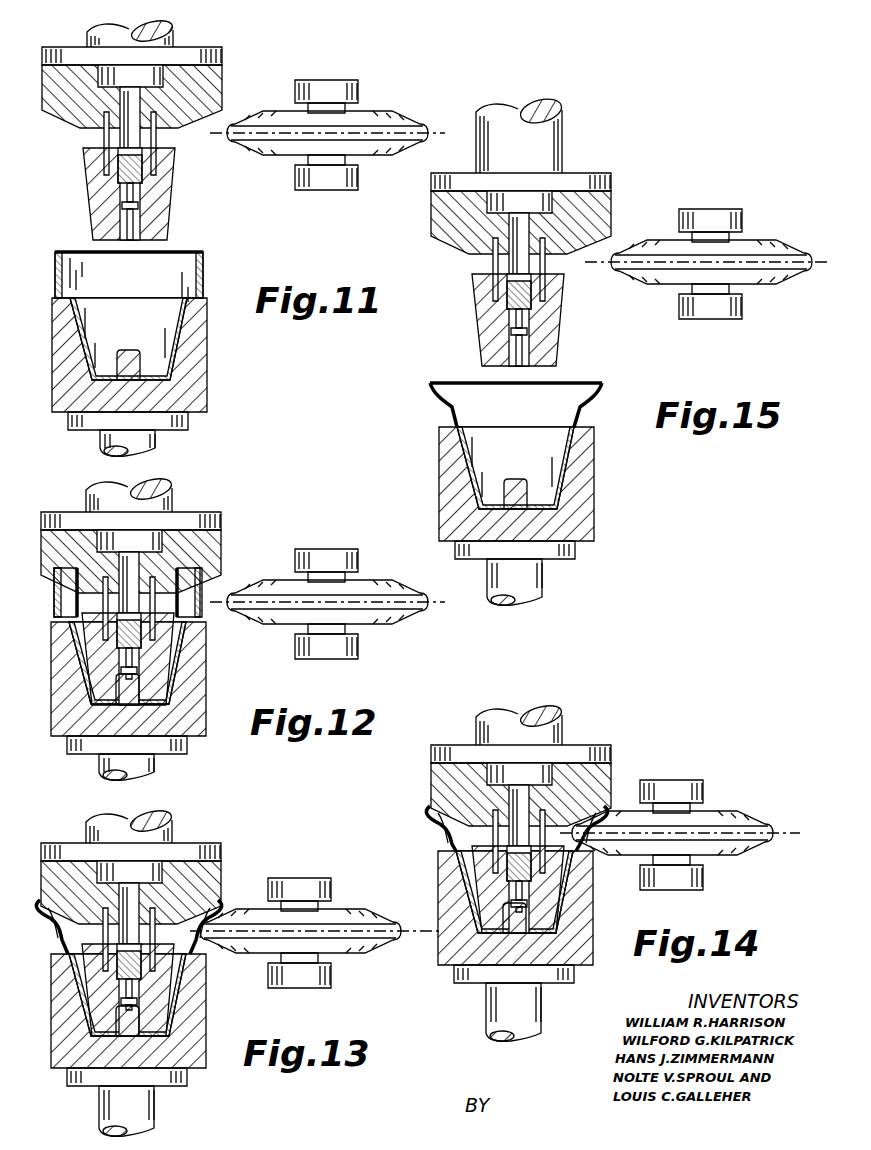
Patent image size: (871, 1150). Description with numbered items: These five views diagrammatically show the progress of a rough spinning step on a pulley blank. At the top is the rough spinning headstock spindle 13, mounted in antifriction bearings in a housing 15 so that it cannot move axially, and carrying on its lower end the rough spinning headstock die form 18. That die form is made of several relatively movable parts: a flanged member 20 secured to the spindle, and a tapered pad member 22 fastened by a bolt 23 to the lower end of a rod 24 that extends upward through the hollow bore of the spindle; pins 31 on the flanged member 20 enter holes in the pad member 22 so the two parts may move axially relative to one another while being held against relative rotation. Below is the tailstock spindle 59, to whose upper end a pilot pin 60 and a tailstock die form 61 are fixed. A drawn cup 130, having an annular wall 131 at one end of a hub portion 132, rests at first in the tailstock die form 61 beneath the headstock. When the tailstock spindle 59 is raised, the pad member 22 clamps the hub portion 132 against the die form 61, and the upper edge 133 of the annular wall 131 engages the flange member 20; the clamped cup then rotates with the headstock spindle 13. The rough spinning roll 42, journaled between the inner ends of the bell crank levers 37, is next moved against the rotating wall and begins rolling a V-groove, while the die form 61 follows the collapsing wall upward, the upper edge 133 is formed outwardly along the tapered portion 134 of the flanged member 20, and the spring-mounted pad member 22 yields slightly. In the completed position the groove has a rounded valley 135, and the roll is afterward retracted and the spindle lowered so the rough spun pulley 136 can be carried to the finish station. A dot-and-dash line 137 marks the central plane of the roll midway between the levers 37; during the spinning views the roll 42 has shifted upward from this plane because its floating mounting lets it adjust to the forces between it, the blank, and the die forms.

In FIG. 11, the headstock spindle 13 is at (88, 40).
In FIG. 15, the headstock spindle 13 is at (563, 135).
In FIG. 12, the headstock spindle 13 is at (86, 495).
In FIG. 13, the headstock spindle 13 is at (90, 830).
In FIG. 14, the housing 15 is at (563, 732).
In FIG. 11, the rough spinning headstock die form 18 is at (222, 80).
In FIG. 15, the rough spinning headstock die form 18 is at (606, 207).
In FIG. 12, the rough spinning headstock die form 18 is at (221, 545).
In FIG. 13, the rough spinning headstock die form 18 is at (221, 870).
In FIG. 14, the rough spinning headstock die form 18 is at (606, 772).
In FIG. 11, the flanged member 20 is at (65, 112).
In FIG. 15, the flanged member 20 is at (442, 238).
In FIG. 12, the flanged member 20 is at (185, 540).
In FIG. 13, the flanged member 20 is at (180, 875).
In FIG. 14, the flanged member 20 is at (430, 785).
In FIG. 11, the pad member 22 is at (100, 205).
In FIG. 15, the pad member 22 is at (486, 310).
In FIG. 12, the pad member 22 is at (95, 658).
In FIG. 13, the pad member 22 is at (100, 1010).
In FIG. 14, the pad member 22 is at (490, 885).
In FIG. 11, the bolt 23 is at (138, 207).
In FIG. 15, the bolt 23 is at (530, 333).
In FIG. 12, the bolt 23 is at (140, 676).
In FIG. 13, the bolt 23 is at (100, 1003).
In FIG. 14, the bolt 23 is at (505, 895).
In FIG. 11, the rod 24 is at (143, 97).
In FIG. 15, the rod 24 is at (513, 220).
In FIG. 12, the rod 24 is at (140, 555).
In FIG. 13, the rod 24 is at (140, 882).
In FIG. 14, the rod 24 is at (512, 812).
In FIG. 11, the pins 31 is at (145, 138).
In FIG. 15, the pins 31 is at (533, 212).
In FIG. 12, the pins 31 is at (133, 560).
In FIG. 13, the pins 31 is at (113, 913).
In FIG. 14, the pins 31 is at (545, 780).
In FIG. 11, the bell crank levers 37 is at (340, 85).
In FIG. 15, the bell crank levers 37 is at (720, 213).
In FIG. 12, the bell crank levers 37 is at (335, 555).
In FIG. 13, the bell crank levers 37 is at (315, 885).
In FIG. 14, the bell crank levers 37 is at (685, 785).
In FIG. 11, the rough spinning roll 42 is at (400, 118).
In FIG. 15, the rough spinning roll 42 is at (778, 278).
In FIG. 12, the rough spinning roll 42 is at (400, 588).
In FIG. 13, the rough spinning roll 42 is at (365, 908).
In FIG. 14, the rough spinning roll 42 is at (750, 845).
In FIG. 11, the tailstock spindle 59 is at (155, 447).
In FIG. 15, the tailstock spindle 59 is at (543, 578).
In FIG. 12, the tailstock spindle 59 is at (155, 773).
In FIG. 13, the tailstock spindle 59 is at (155, 1107).
In FIG. 14, the tailstock spindle 59 is at (543, 1008).
In FIG. 11, the pilot pin 60 is at (130, 362).
In FIG. 15, the pilot pin 60 is at (525, 486).
In FIG. 12, the pilot pin 60 is at (140, 688).
In FIG. 13, the pilot pin 60 is at (140, 1015).
In FIG. 14, the pilot pin 60 is at (525, 910).
In FIG. 11, the tailstock die form 61 is at (200, 392).
In FIG. 15, the tailstock die form 61 is at (590, 512).
In FIG. 12, the tailstock die form 61 is at (200, 718).
In FIG. 13, the tailstock die form 61 is at (200, 1035).
In FIG. 14, the tailstock die form 61 is at (590, 937).
In FIG. 11, the drawn cup 130 is at (195, 252).
In FIG. 12, the drawn cup 130 is at (195, 625).
In FIG. 13, the drawn cup 130 is at (195, 952).
In FIG. 11, the annular wall 131 is at (204, 280).
In FIG. 12, the annular wall 131 is at (203, 600).
In FIG. 11, the hub portion 132 is at (180, 320).
In FIG. 15, the hub portion 132 is at (560, 470).
In FIG. 12, the hub portion 132 is at (70, 690).
In FIG. 13, the hub portion 132 is at (180, 1000).
In FIG. 14, the hub portion 132 is at (560, 895).
In FIG. 11, the upper edge 133 is at (205, 256).
In FIG. 15, the upper edge 133 is at (600, 385).
In FIG. 12, the upper edge 133 is at (205, 585).
In FIG. 13, the upper edge 133 is at (210, 900).
In FIG. 14, the upper edge 133 is at (445, 815).
In FIG. 11, the tapered portion 134 is at (178, 122).
In FIG. 15, the tapered portion 134 is at (588, 242).
In FIG. 12, the tapered portion 134 is at (58, 575).
In FIG. 13, the tapered portion 134 is at (210, 893).
In FIG. 14, the tapered portion 134 is at (440, 800).
In FIG. 15, the rounded valley 135 is at (548, 385).
In FIG. 14, the rounded valley 135 is at (605, 783).
In FIG. 15, the rough spun pulley 136 is at (582, 405).
In FIG. 14, the rough spun pulley 136 is at (580, 855).
In FIG. 11, the dot-and-dash line 137 is at (223, 134).
In FIG. 15, the dot-and-dash line 137 is at (594, 262).
In FIG. 12, the dot-and-dash line 137 is at (445, 604).
In FIG. 13, the dot-and-dash line 137 is at (417, 932).
In FIG. 14, the dot-and-dash line 137 is at (795, 835).